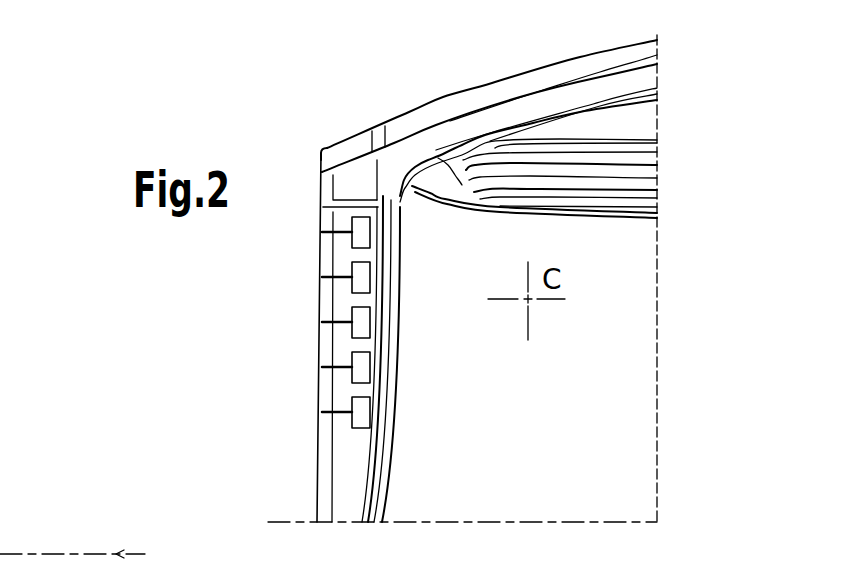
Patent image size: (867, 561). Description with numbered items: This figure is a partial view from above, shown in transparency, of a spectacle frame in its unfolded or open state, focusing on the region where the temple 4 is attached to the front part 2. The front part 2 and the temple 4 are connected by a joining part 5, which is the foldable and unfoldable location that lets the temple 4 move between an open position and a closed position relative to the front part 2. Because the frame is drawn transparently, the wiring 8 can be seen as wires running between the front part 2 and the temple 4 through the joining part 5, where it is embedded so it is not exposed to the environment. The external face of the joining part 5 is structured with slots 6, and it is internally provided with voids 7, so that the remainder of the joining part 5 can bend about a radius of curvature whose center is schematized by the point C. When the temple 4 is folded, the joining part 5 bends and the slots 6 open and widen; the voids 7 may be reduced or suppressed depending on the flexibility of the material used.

The front part 2 is at (428, 118).
The temple 4 is at (335, 486).
The joining part 5 is at (428, 243).
The slots 6 is at (308, 277).
The voids 7 is at (375, 322).
The wiring 8 is at (383, 447).